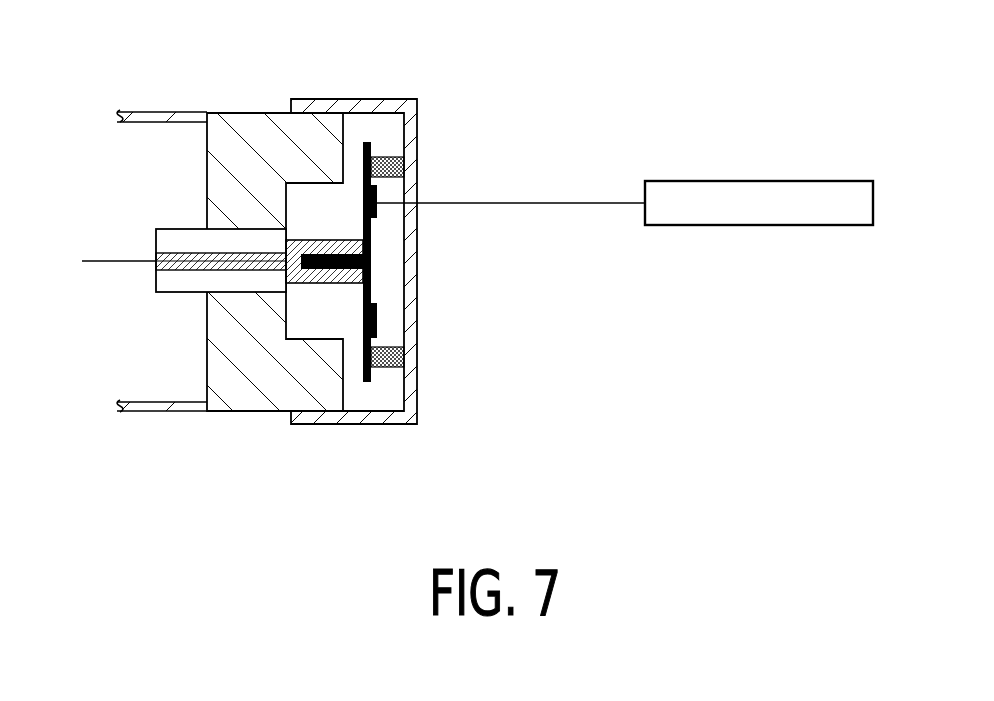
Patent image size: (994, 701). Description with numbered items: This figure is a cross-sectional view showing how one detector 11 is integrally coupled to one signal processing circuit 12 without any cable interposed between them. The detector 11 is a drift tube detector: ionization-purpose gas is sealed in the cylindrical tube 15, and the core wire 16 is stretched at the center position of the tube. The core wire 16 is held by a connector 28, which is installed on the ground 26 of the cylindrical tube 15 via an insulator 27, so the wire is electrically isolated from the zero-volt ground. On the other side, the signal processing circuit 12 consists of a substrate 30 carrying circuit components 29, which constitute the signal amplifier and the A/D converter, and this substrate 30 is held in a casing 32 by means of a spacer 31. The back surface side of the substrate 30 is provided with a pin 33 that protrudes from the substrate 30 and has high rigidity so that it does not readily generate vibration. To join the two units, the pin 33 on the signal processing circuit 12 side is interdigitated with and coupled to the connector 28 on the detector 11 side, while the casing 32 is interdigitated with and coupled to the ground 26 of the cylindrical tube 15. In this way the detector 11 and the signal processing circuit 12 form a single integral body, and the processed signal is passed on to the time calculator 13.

The detector 11 is at (162, 103).
The signal processing circuit 12 is at (381, 85).
The time calculator 13 is at (760, 181).
The cylindrical tube 15 is at (155, 413).
The core wire 16 is at (108, 260).
The ground 26 is at (258, 412).
The insulator 27 is at (176, 240).
The connector 28 is at (318, 284).
The circuit components 29 is at (378, 305).
The substrate 30 is at (372, 383).
The spacer 31 is at (386, 157).
The casing 32 is at (350, 425).
The pin 33 is at (325, 240).